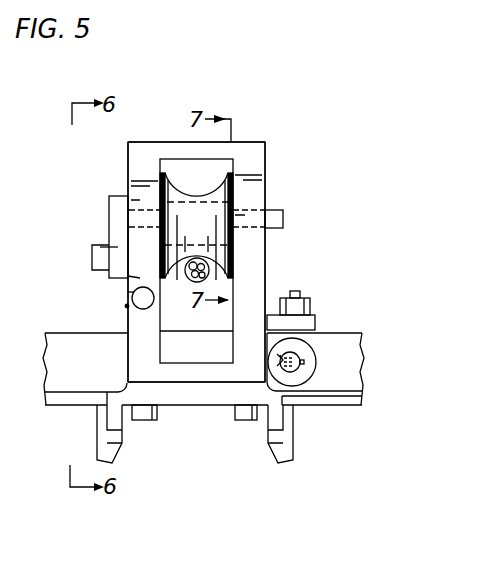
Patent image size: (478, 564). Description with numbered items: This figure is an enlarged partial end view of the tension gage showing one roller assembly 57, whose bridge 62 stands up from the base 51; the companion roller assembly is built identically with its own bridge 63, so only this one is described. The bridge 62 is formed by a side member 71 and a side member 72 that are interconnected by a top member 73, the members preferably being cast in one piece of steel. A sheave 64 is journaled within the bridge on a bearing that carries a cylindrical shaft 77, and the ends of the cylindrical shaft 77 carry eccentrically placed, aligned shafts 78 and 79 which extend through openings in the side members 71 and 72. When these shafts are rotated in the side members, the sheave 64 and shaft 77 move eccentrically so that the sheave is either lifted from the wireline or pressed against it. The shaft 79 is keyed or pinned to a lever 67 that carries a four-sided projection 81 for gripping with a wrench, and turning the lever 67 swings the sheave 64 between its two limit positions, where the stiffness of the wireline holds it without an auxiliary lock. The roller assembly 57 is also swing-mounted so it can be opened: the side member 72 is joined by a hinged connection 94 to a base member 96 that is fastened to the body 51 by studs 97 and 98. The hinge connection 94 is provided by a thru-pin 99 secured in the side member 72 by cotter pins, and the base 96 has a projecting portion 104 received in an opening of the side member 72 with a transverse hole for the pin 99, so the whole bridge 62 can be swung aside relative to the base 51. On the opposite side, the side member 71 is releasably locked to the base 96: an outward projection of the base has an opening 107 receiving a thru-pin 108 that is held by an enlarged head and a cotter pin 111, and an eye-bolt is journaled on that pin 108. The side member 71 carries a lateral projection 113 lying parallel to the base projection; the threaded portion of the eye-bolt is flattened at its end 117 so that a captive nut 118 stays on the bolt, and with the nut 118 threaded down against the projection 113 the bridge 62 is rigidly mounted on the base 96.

The base 51 is at (213, 400).
The roller assembly 57 is at (248, 138).
The bridge 62 is at (268, 164).
The bridge 63 is at (140, 278).
The sheave 64 is at (217, 254).
The lever 67 is at (118, 247).
The side member 71 is at (248, 288).
The side member 72 is at (137, 173).
The top member 73 is at (173, 141).
The cylindrical shaft 77 is at (212, 215).
The shaft 78 is at (283, 218).
The shaft 79 is at (135, 213).
The four-sided projection 81 is at (97, 245).
The hinged connection 94 is at (130, 306).
The base member 96 is at (188, 372).
The stud 97 is at (145, 420).
The stud 98 is at (250, 420).
The thru-pin 99 is at (134, 292).
The projecting portion 104 is at (140, 351).
The opening 107 is at (303, 378).
The thru-pin 108 is at (297, 352).
The cotter pin 111 is at (303, 365).
The lateral projection 113 is at (313, 323).
The flattened end 117 is at (300, 293).
The captive nut 118 is at (312, 306).